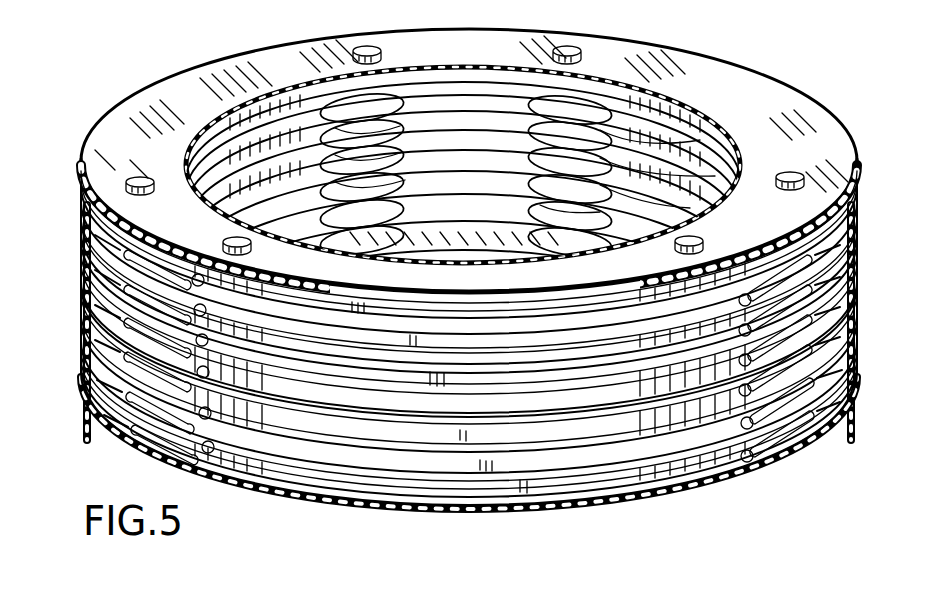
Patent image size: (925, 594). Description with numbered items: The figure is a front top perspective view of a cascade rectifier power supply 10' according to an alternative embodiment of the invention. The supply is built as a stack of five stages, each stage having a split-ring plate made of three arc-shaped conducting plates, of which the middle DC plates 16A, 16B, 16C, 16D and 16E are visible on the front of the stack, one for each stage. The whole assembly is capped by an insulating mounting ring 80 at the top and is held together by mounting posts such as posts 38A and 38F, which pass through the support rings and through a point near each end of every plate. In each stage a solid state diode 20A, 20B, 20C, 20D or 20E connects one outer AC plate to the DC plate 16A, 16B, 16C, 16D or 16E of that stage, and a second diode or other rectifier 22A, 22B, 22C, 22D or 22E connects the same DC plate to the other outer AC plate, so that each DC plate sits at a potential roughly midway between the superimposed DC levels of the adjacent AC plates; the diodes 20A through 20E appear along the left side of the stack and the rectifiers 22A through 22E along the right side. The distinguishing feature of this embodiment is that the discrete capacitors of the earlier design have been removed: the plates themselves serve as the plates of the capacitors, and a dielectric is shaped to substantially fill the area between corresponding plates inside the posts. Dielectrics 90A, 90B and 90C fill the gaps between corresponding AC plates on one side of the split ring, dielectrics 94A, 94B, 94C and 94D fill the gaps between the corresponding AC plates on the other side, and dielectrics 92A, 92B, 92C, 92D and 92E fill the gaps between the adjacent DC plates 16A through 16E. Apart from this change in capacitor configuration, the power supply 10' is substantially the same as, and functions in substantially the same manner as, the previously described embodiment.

The power supply 10' is at (84, 84).
The top plate 80 is at (470, 100).
The mounting post 38A is at (402, 105).
The mounting post 38F is at (537, 121).
The dielectric 90A is at (405, 129).
The dielectric 90B is at (408, 153).
The dielectric 90C is at (410, 182).
The dielectric 94A is at (712, 142).
The dielectric 94B is at (722, 180).
The dielectric 94C is at (697, 212).
The dielectric 94D is at (525, 204).
The DC plate 16A is at (535, 350).
The DC plate 16B is at (563, 360).
The DC plate 16C is at (603, 375).
The DC plate 16D is at (615, 455).
The DC plate 16E is at (690, 440).
The dielectric 92A is at (306, 330).
The dielectric 92B is at (356, 365).
The dielectric 92C is at (415, 400).
The dielectric 92D is at (330, 455).
The dielectric 92E is at (375, 462).
The solid state diode 20A is at (172, 262).
The solid state diode 20B is at (100, 286).
The solid state diode 20C is at (100, 325).
The solid state diode 20D is at (100, 397).
The solid state diode 20E is at (108, 428).
The rectifier 22A is at (782, 245).
The rectifier 22B is at (838, 284).
The rectifier 22C is at (840, 308).
The rectifier 22D is at (840, 348).
The rectifier 22E is at (770, 445).